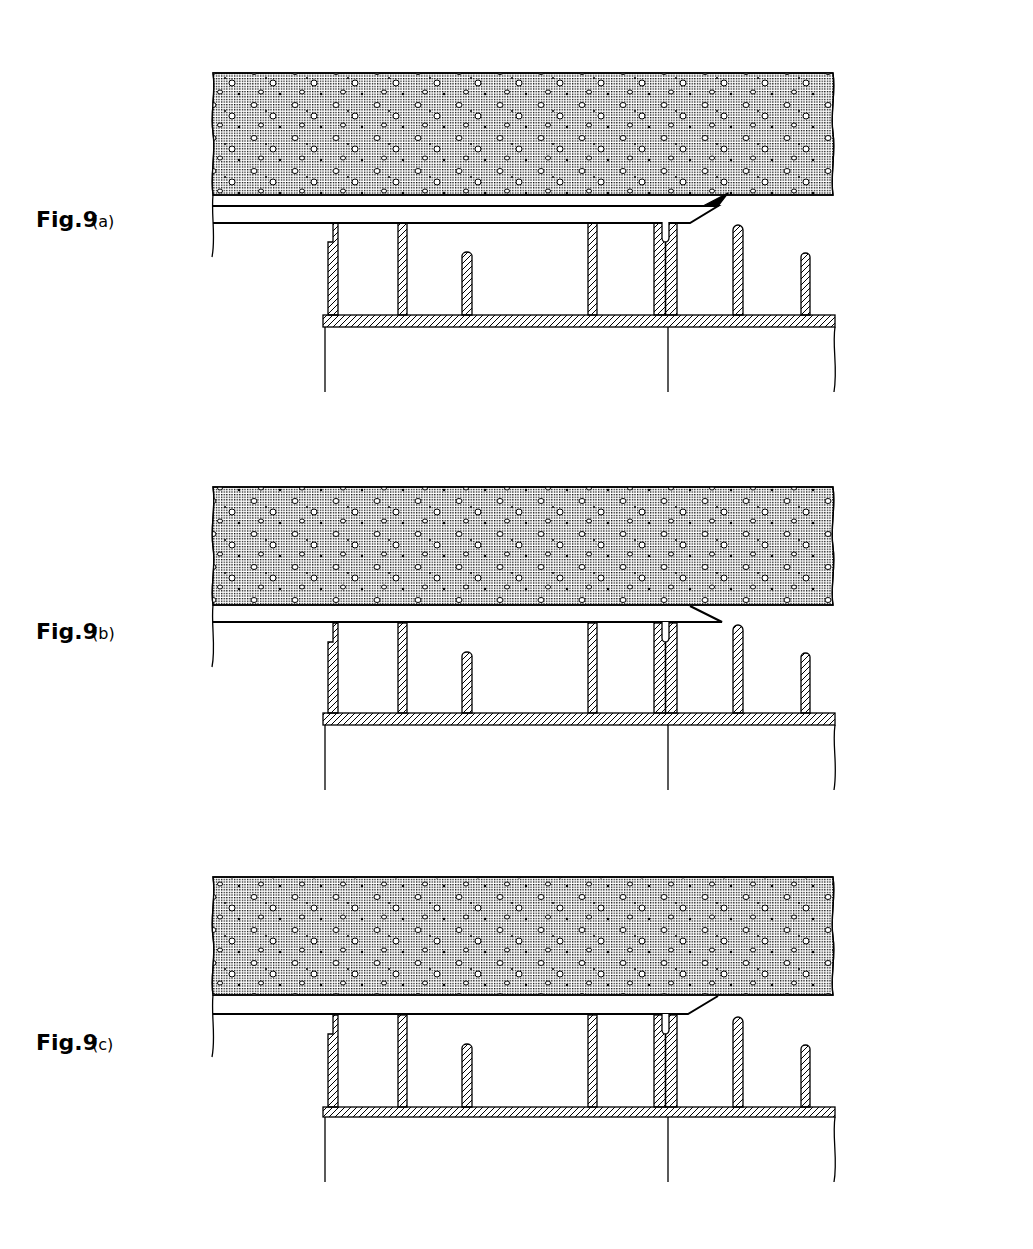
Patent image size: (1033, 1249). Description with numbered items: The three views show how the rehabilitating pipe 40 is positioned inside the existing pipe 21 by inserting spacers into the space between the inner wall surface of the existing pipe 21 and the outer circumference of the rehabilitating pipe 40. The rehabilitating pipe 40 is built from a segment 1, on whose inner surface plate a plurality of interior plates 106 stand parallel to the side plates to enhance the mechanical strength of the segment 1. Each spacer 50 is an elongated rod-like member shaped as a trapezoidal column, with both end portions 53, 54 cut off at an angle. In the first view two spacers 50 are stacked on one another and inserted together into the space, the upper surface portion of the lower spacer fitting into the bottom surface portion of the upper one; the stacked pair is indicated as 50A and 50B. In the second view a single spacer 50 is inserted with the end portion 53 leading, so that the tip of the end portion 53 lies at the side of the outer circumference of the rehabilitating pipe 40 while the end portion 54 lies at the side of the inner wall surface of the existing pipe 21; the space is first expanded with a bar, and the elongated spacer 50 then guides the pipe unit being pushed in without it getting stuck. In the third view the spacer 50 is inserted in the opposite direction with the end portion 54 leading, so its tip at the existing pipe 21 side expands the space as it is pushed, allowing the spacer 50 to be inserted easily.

In FIG. 9A, the segment 1 is at (332, 382).
In FIG. 9B, the segment 1 is at (331, 785).
In FIG. 9C, the segment 1 is at (331, 1175).
In FIG. 9A, the existing pipe 21 is at (697, 72).
In FIG. 9B, the existing pipe 21 is at (695, 486).
In FIG. 9C, the existing pipe 21 is at (697, 876).
In FIG. 9A, the rehabilitating pipe 40 is at (828, 276).
In FIG. 9B, the rehabilitating pipe 40 is at (828, 679).
In FIG. 9C, the rehabilitating pipe 40 is at (828, 1072).
In FIG. 9A, the interior plate 106 is at (396, 262).
In FIG. 9B, the interior plate 106 is at (396, 664).
In FIG. 9C, the interior plate 106 is at (396, 1057).
In FIG. 9B, the spacer 50 is at (700, 638).
In FIG. 9C, the spacer 50 is at (700, 1030).
In FIG. 9A, the gap 50A is at (702, 236).
In FIG. 9A, the heat conductive sheet end portion 50B is at (736, 207).
In FIG. 9B, the end portion 53 is at (712, 609).
In FIG. 9C, the end portion 54 is at (718, 1000).